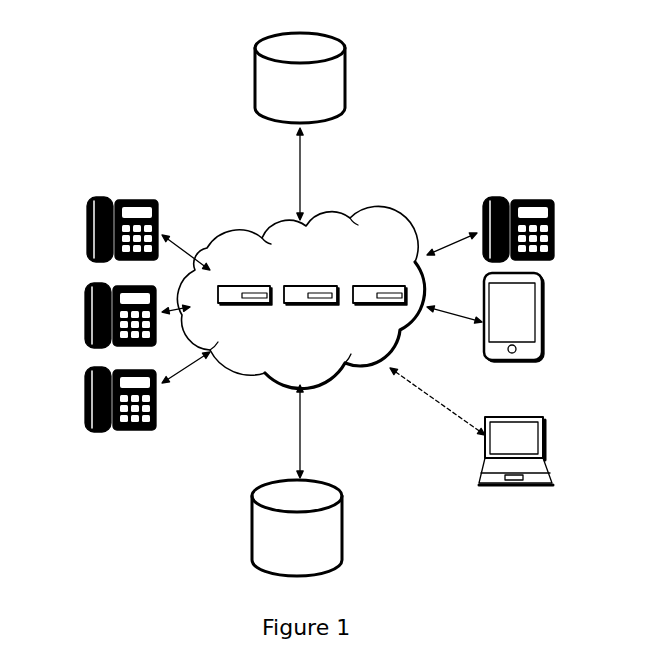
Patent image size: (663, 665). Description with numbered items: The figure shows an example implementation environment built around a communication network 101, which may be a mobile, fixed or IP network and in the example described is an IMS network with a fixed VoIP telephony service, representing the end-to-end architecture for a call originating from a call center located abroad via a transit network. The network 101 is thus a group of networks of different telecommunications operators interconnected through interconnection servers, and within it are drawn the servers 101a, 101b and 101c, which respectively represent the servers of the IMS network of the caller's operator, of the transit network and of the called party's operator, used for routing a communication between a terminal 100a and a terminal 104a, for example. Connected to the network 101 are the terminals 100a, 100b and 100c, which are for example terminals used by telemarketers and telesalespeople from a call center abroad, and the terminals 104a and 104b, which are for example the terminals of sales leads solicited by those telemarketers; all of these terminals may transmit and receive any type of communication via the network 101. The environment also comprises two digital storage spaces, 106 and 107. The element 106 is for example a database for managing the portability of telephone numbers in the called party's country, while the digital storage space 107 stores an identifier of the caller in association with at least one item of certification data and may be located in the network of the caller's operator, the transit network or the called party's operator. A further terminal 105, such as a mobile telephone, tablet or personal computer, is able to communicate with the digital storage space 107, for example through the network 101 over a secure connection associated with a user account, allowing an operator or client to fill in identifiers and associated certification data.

The terminal 100a is at (135, 198).
The terminal 100b is at (77, 302).
The terminal 100c is at (77, 384).
The communication network 101 is at (352, 220).
The server 101a is at (230, 286).
The server 101b is at (294, 306).
The server 101c is at (355, 285).
The terminal 104a is at (538, 198).
The terminal 104b is at (548, 290).
The terminal 105 is at (490, 415).
The digital storage space 106 is at (330, 33).
The digital storage space 107 is at (328, 481).